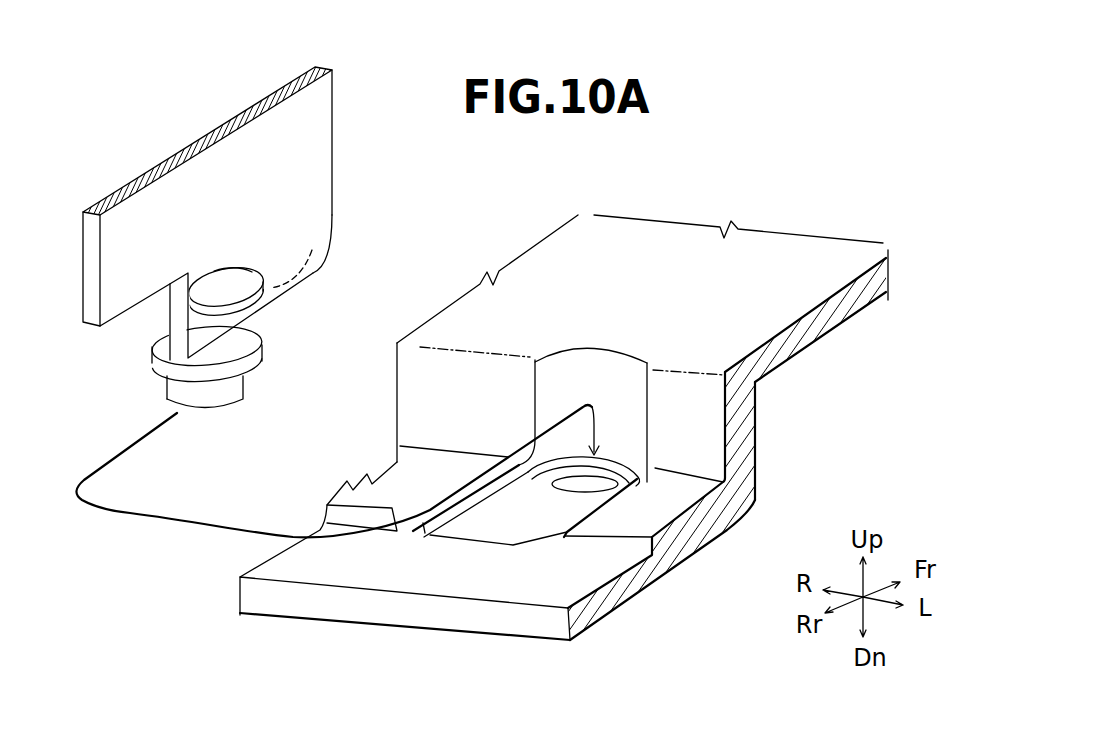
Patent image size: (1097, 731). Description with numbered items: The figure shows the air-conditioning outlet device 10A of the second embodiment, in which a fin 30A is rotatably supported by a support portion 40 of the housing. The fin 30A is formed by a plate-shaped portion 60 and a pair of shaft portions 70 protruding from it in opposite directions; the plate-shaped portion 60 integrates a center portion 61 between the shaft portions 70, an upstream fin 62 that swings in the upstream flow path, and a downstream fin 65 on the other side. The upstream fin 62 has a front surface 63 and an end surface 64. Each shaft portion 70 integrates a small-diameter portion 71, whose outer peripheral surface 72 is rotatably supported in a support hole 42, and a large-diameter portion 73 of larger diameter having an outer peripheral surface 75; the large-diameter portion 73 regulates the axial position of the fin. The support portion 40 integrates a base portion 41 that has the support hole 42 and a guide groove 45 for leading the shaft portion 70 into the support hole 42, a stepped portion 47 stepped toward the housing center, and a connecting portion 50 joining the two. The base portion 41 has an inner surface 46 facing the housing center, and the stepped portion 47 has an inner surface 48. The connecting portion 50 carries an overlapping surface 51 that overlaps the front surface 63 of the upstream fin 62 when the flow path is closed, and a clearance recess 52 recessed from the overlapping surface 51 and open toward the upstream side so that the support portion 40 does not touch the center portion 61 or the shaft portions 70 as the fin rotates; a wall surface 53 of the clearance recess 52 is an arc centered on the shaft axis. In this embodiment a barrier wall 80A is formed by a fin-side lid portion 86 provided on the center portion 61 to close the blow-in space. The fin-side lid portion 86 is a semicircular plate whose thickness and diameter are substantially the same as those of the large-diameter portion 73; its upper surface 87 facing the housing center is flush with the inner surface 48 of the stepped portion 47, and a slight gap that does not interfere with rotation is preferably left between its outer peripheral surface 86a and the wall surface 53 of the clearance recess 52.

The air-conditioning outlet device 10A is at (718, 68).
The fin 30A is at (338, 96).
The support portion 40 is at (765, 481).
The base portion 41 is at (677, 543).
The support hole 42 is at (594, 487).
The guide groove 45 is at (488, 527).
The inner surface 46 is at (400, 477).
The stepped portion 47 is at (828, 318).
The inner surface 48 is at (784, 257).
The connecting portion 50 is at (740, 433).
The overlapping surface 51 is at (492, 378).
The clearance recess 52 is at (580, 363).
The wall surface 53 is at (623, 375).
The plate-shaped portion 60 is at (232, 8).
The center portion 61 is at (220, 153).
The upstream fin 62 is at (306, 68).
The front surface 63 is at (322, 165).
The end surface 64 is at (290, 298).
The downstream fin 65 is at (127, 208).
The shaft portion 70 is at (290, 452).
The small-diameter portion 71 is at (220, 397).
The outer peripheral surface 72 is at (170, 392).
The large-diameter portion 73 is at (250, 363).
The outer peripheral surface 75 is at (150, 364).
The barrier wall 80A is at (254, 284).
The fin-side lid portion 86 is at (247, 297).
The outer peripheral surface 86a is at (217, 303).
The upper surface 87 is at (228, 283).